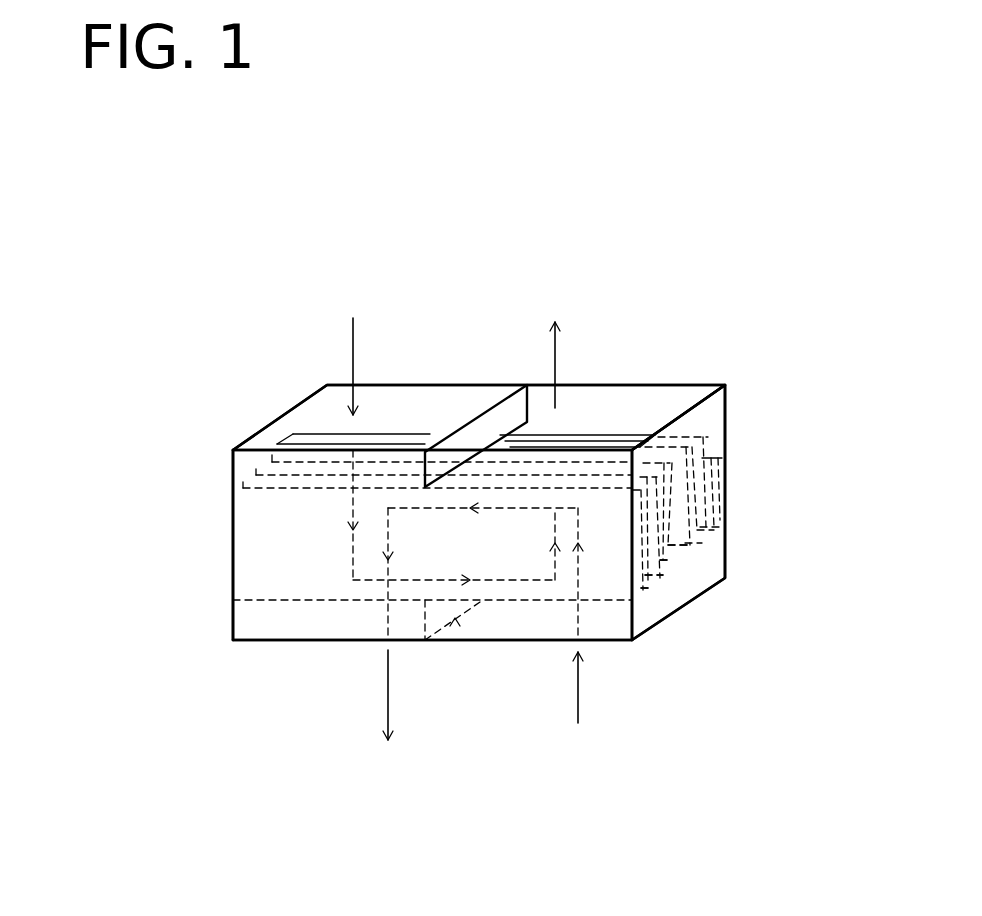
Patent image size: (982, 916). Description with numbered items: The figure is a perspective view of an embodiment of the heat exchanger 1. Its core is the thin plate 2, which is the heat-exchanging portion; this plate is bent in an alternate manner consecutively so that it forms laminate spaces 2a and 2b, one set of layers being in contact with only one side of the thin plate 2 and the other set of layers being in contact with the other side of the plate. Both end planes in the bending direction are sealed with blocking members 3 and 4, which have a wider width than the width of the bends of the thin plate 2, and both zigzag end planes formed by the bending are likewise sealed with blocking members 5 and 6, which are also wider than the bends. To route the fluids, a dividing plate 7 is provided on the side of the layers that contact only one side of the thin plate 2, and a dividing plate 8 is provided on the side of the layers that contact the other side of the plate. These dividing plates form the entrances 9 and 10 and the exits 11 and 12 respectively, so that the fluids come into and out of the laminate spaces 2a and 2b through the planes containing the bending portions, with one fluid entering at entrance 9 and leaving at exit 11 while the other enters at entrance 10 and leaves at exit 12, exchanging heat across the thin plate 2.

The heat exchanger 1 is at (246, 340).
The thin plate 2 is at (673, 592).
The laminate space 2a is at (712, 458).
The laminate space 2b is at (675, 560).
The blocking member 3 is at (262, 620).
The blocking member 4 is at (688, 398).
The blocking member 5 is at (233, 468).
The blocking member 6 is at (712, 415).
The dividing plate 7 is at (503, 408).
The dividing plate 8 is at (477, 603).
The entrance 9 is at (410, 397).
The entrance 10 is at (603, 643).
The exit 11 is at (625, 398).
The exit 12 is at (328, 640).